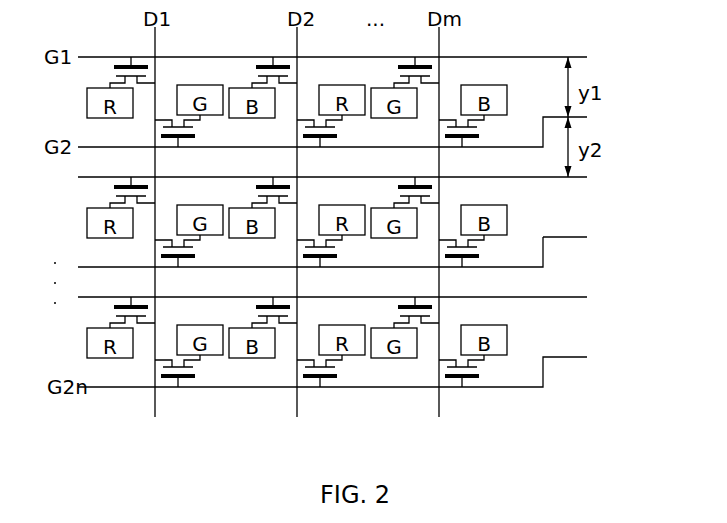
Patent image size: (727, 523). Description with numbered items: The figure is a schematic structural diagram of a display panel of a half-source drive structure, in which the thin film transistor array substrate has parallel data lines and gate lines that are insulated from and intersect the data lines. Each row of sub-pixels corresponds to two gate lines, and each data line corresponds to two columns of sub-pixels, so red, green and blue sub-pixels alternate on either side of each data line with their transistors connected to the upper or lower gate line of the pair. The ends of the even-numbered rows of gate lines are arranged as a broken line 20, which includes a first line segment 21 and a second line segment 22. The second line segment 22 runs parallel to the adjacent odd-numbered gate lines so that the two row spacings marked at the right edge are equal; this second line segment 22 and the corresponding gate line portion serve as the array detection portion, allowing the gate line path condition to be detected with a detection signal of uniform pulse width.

The broken line 20 is at (545, 357).
The first line segment 21 is at (545, 257).
The second line segment 22 is at (573, 237).